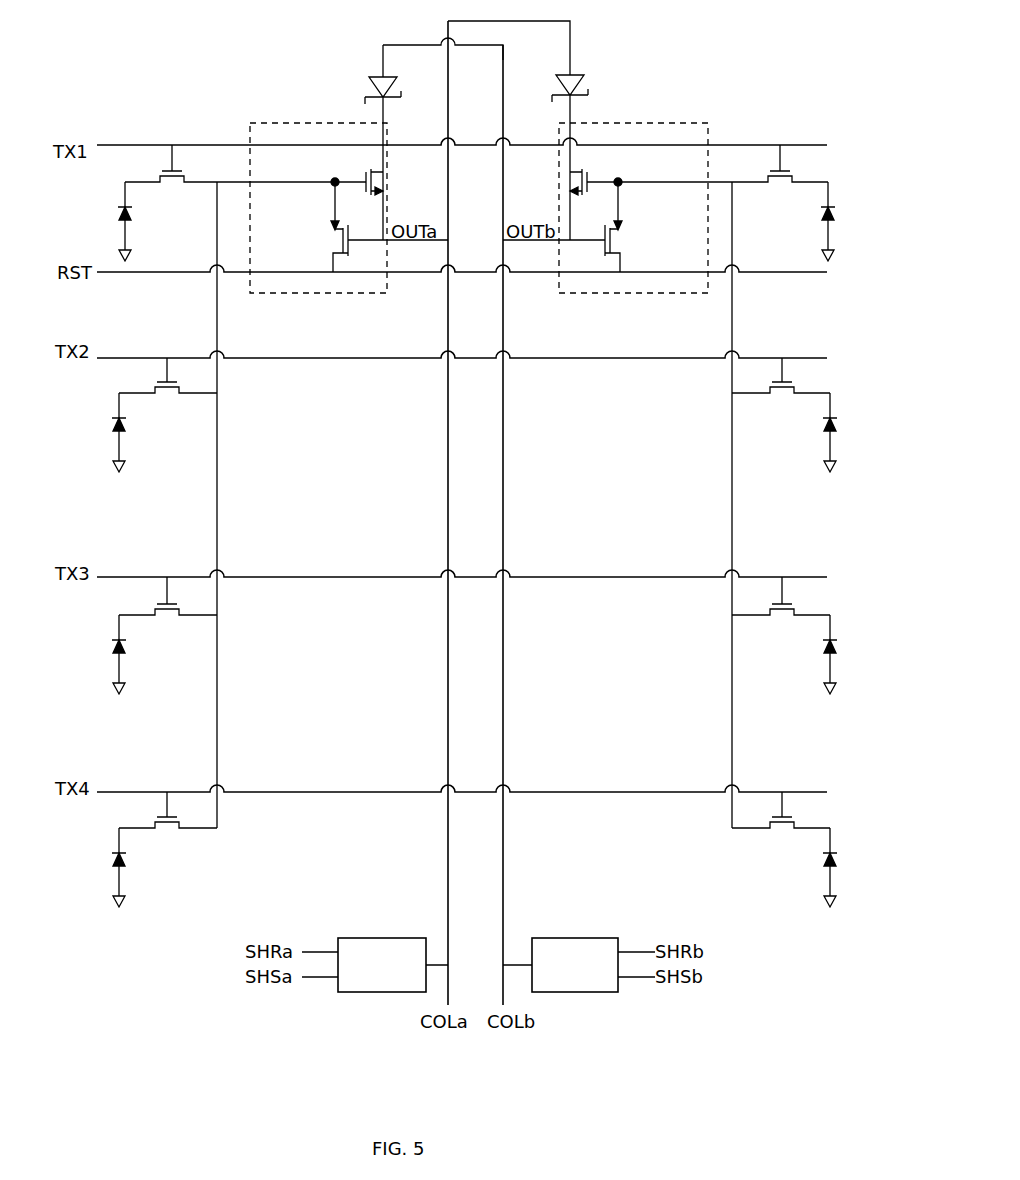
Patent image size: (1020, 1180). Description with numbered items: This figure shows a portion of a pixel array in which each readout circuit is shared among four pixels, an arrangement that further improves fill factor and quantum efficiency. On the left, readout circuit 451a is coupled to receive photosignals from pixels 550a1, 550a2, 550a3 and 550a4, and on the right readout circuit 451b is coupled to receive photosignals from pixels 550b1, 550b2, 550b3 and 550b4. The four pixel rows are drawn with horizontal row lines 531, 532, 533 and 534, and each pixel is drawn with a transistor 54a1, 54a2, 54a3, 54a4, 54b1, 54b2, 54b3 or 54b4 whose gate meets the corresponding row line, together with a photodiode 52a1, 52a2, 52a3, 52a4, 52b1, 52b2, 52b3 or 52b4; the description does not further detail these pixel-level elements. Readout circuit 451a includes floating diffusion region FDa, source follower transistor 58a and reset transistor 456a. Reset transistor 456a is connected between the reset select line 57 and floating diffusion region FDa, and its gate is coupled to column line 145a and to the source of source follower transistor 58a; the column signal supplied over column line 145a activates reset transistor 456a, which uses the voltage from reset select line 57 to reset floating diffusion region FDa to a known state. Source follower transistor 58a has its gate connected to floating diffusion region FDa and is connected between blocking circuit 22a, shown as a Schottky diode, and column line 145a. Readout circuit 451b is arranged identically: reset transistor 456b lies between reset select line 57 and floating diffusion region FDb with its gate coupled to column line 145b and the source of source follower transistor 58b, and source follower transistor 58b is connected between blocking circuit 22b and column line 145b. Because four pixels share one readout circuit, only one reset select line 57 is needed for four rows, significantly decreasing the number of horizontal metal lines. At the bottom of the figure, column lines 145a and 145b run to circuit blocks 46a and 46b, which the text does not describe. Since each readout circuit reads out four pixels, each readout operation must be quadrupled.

The pixel 550a1 is at (113, 88).
The pixel 550a2 is at (163, 440).
The pixel 550a3 is at (161, 655).
The pixel 550a4 is at (163, 870).
The pixel 550b1 is at (802, 90).
The pixel 550b2 is at (778, 446).
The pixel 550b3 is at (778, 676).
The pixel 550b4 is at (778, 889).
The row select line TX1 531 is at (178, 143).
The row select line TX2 532 is at (180, 357).
The row select line TX3 533 is at (180, 576).
The row select line TX4 534 is at (180, 791).
The transfer transistor 54a1 is at (163, 168).
The transfer transistor 54a2 is at (156, 382).
The transfer transistor 54a3 is at (159, 602).
The transfer transistor 54a4 is at (159, 815).
The transfer transistor 54b1 is at (793, 166).
The transfer transistor 54b2 is at (793, 380).
The transfer transistor 54b3 is at (793, 599).
The transfer transistor 54b4 is at (793, 811).
The photodiode 52a1 is at (122, 206).
The photodiode 52a2 is at (118, 418).
The photodiode 52a3 is at (118, 639).
The photodiode 52a4 is at (118, 852).
The photodiode 52b1 is at (832, 202).
The photodiode 52b2 is at (832, 414).
The photodiode 52b3 is at (832, 635).
The photodiode 52b4 is at (832, 847).
The reset select line 57 is at (155, 274).
The readout circuit 451a is at (290, 122).
The readout circuit 451b is at (668, 122).
The blocking circuit 22a is at (378, 75).
The blocking circuit 22b is at (572, 75).
The column line 145a is at (449, 107).
The column line 145b is at (502, 102).
The source follower transistor 58a is at (366, 168).
The source follower transistor 58b is at (587, 170).
The floating diffusion region FDa is at (335, 192).
The floating diffusion region FDb is at (620, 192).
The reset transistor 456a is at (343, 243).
The reset transistor 456b is at (612, 243).
The sample and hold circuit 46a is at (400, 974).
The sample and hold circuit 46b is at (593, 974).